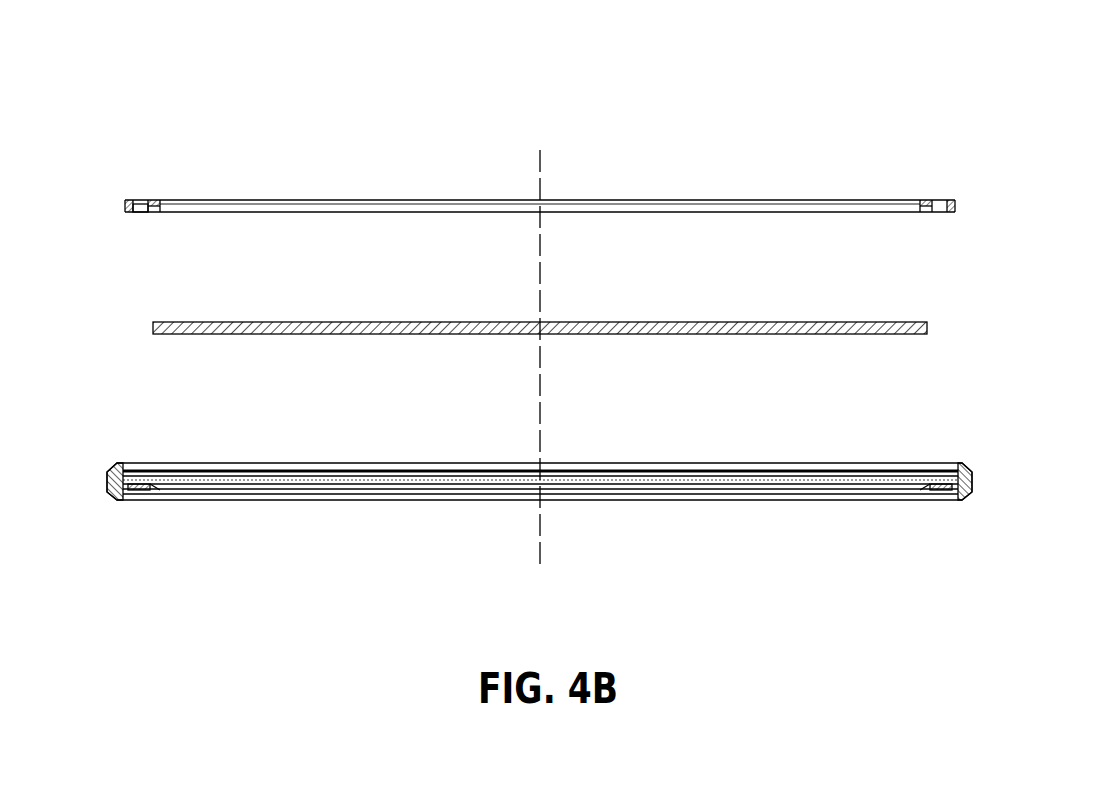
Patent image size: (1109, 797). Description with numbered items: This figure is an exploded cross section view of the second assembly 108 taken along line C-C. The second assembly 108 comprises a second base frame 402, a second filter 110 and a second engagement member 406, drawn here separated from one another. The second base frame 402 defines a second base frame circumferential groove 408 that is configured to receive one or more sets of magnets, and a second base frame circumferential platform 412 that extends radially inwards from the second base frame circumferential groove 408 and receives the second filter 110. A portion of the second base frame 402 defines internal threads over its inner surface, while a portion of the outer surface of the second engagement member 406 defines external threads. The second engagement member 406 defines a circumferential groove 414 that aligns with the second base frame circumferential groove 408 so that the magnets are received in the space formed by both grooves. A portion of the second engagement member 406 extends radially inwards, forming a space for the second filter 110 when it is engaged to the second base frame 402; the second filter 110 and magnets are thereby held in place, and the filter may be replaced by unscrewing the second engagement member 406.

The second assembly 108 is at (763, 291).
The second engagement member 406 is at (540, 172).
The circumferential groove 414 is at (109, 254).
The second filter 110 is at (561, 373).
The second base frame 402 is at (526, 523).
The second base frame circumferential groove 408 is at (170, 439).
The second base frame circumferential platform 412 is at (889, 441).